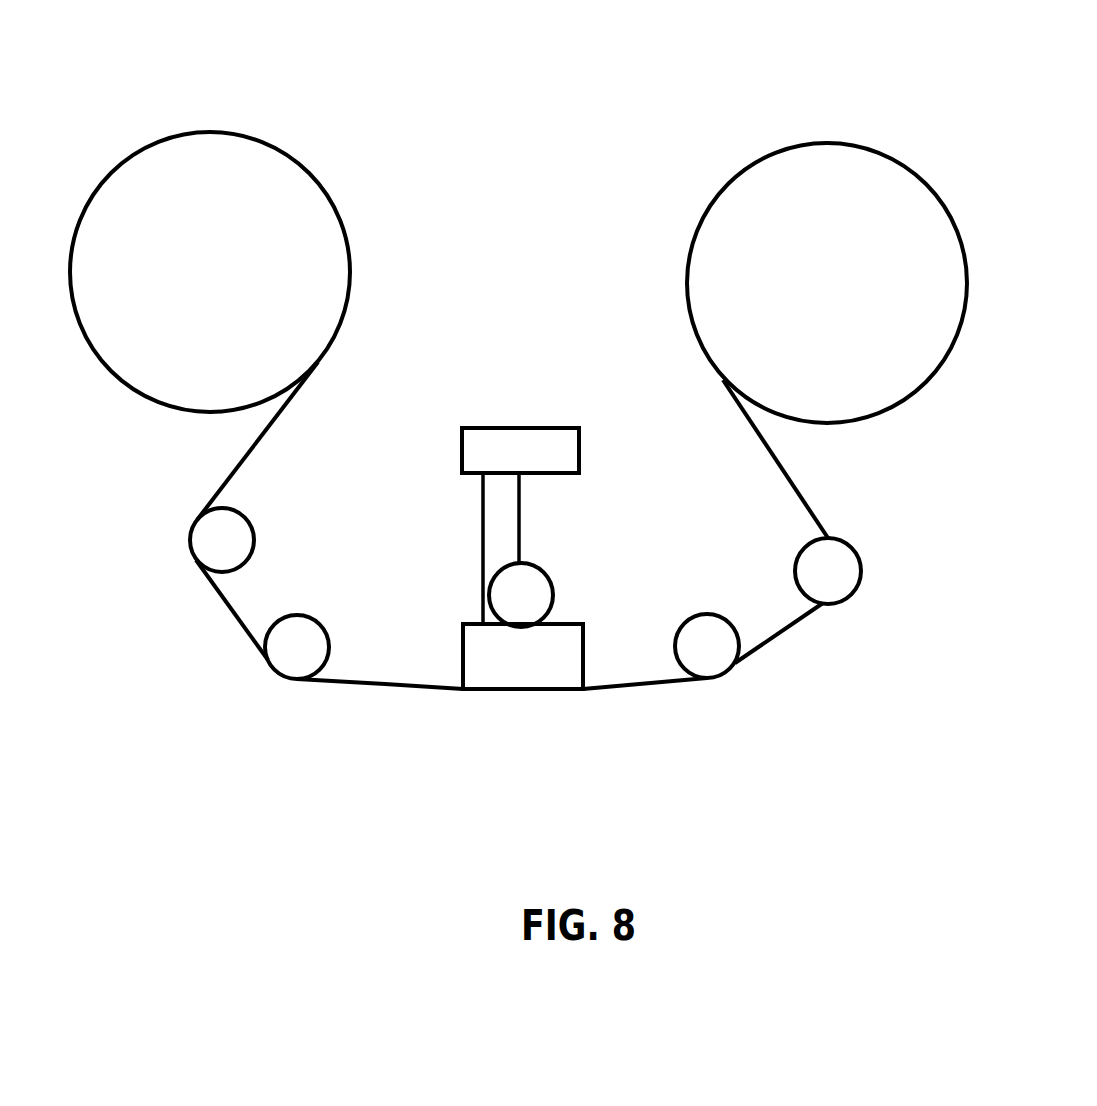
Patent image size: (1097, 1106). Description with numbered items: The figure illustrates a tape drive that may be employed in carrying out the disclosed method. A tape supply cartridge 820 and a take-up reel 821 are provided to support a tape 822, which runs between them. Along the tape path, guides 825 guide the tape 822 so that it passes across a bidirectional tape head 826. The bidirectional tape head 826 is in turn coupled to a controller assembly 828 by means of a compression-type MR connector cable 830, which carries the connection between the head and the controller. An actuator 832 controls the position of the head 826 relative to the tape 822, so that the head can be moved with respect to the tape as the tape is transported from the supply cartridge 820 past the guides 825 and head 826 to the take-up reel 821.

The tape supply cartridge 820 is at (204, 133).
The take-up reel 821 is at (828, 143).
The tape 822 is at (385, 685).
The guides 825 is at (257, 533).
The bidirectional tape head 826 is at (583, 657).
The controller assembly 828 is at (518, 427).
The compression-type MR connector cable 830 is at (483, 593).
The actuator 832 is at (547, 572).